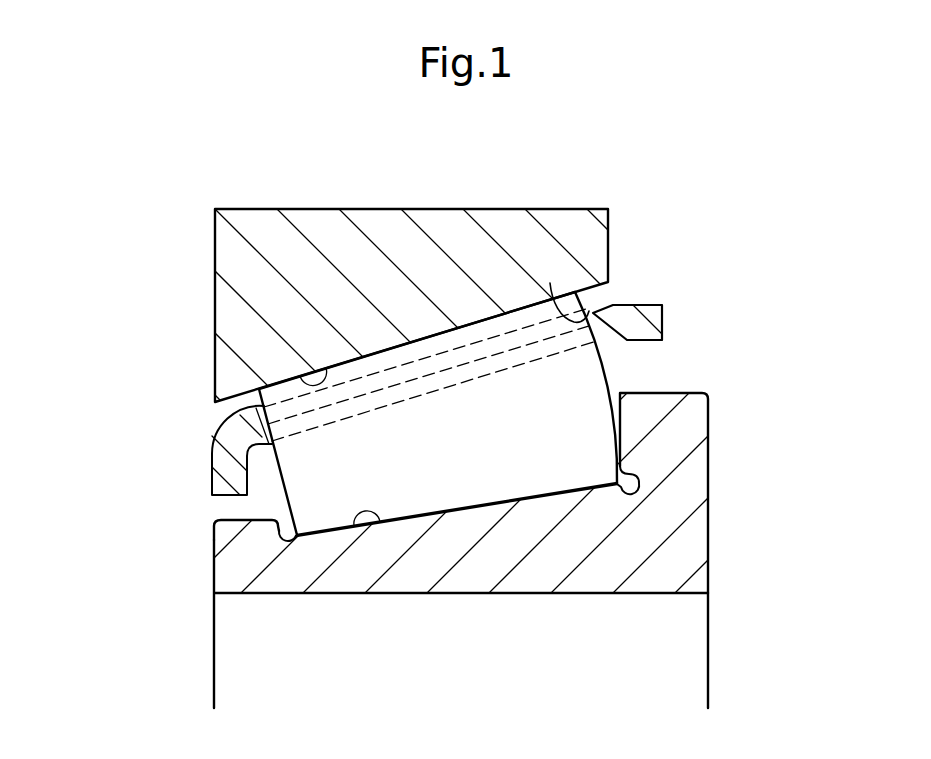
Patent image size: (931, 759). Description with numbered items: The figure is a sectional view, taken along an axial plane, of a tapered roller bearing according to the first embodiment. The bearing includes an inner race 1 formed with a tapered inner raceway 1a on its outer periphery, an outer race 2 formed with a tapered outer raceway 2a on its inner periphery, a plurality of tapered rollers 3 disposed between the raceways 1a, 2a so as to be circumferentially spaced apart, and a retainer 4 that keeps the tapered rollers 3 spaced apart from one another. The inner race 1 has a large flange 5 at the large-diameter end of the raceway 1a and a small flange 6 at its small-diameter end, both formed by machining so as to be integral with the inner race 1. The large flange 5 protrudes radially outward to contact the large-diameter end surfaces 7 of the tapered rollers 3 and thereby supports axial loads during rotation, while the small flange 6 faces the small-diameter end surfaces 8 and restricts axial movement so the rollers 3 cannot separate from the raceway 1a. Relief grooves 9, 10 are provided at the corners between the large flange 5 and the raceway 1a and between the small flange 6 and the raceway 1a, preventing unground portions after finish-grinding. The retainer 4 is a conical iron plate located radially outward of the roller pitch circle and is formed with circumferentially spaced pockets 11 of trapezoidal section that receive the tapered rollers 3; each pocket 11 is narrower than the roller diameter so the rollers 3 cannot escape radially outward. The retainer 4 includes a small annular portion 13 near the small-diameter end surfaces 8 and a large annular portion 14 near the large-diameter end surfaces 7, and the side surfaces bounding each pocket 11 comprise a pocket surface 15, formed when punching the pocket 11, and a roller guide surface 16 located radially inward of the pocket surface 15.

The inner race 1 is at (213, 577).
The tapered inner raceway 1a is at (380, 524).
The outer race 2 is at (215, 294).
The tapered outer raceway 2a is at (304, 377).
The tapered roller 3 is at (455, 473).
The retainer 4 is at (645, 305).
The large flange 5 is at (693, 413).
The small flange 6 is at (227, 536).
The large-diameter end surface 7 is at (609, 395).
The small-diameter end surface 8 is at (212, 468).
The relief groove 9 is at (613, 490).
The relief groove 10 is at (282, 534).
The pocket 11 is at (550, 283).
The small annular portion 13 is at (213, 435).
The large annular portion 14 is at (653, 318).
The pocket surface 15 is at (390, 377).
The roller guide surface 16 is at (490, 372).